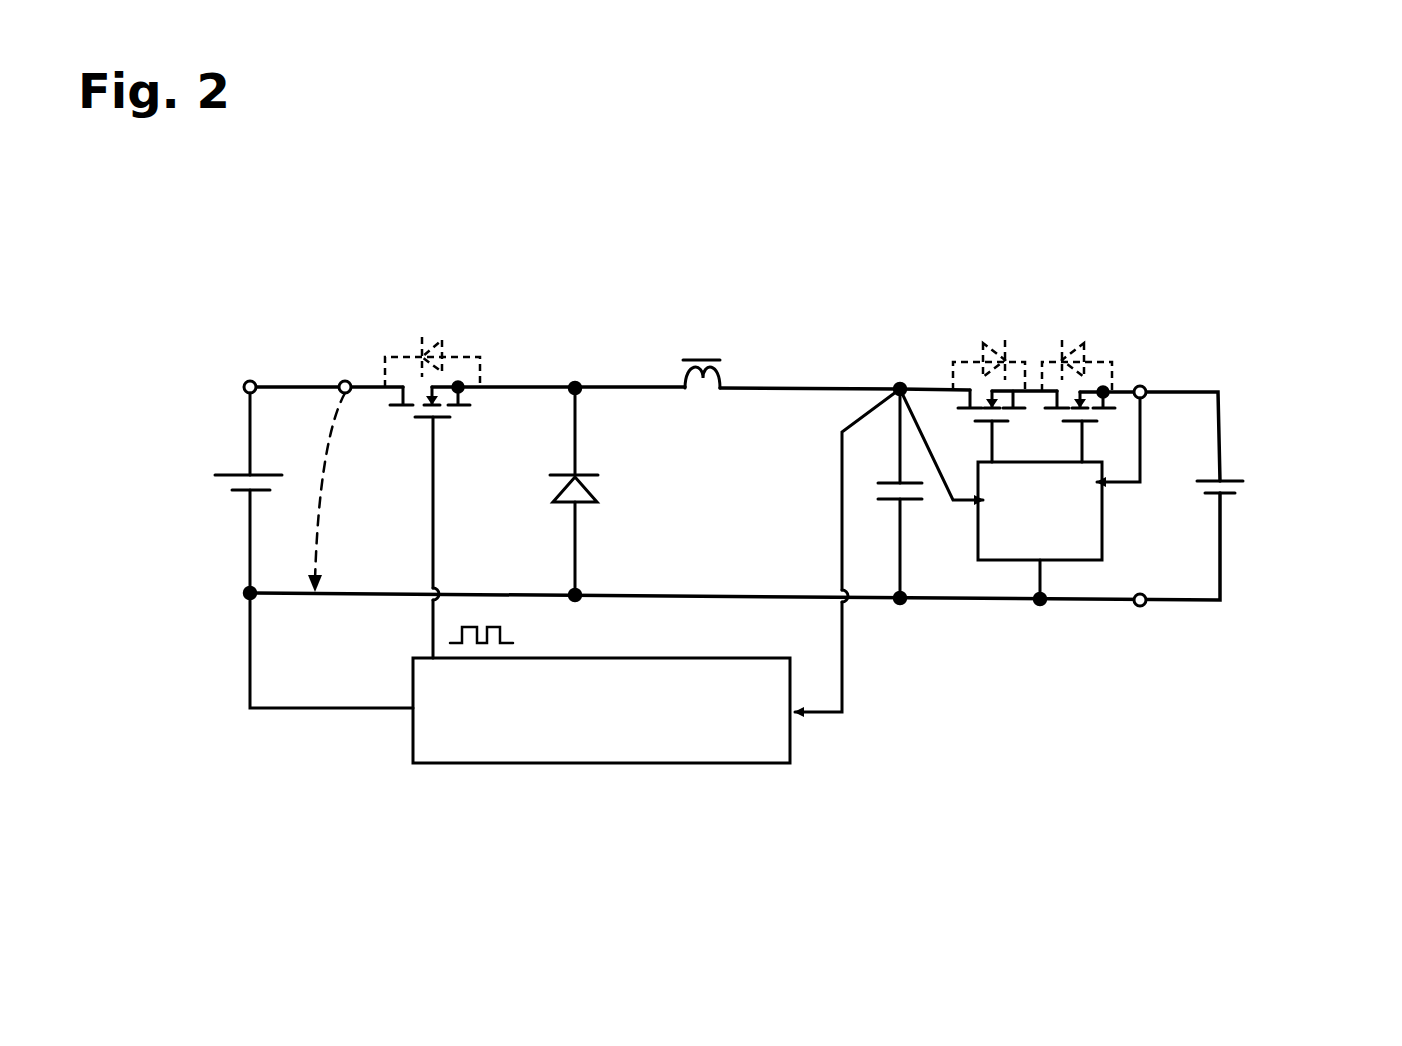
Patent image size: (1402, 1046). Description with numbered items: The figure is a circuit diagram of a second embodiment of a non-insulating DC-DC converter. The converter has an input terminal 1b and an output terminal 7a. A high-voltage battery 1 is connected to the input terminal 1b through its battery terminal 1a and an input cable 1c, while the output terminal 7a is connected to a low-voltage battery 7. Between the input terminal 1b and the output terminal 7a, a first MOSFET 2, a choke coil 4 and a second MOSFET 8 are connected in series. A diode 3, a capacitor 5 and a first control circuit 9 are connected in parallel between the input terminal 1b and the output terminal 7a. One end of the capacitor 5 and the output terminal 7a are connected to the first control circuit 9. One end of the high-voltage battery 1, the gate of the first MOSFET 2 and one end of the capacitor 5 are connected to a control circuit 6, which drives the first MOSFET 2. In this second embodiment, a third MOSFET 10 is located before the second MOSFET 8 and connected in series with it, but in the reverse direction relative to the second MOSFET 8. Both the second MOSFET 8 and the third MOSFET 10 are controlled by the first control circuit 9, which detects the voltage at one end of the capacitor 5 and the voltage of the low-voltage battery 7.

The high-voltage battery 1 is at (217, 492).
The battery terminal 1a is at (248, 385).
The input terminal 1b is at (347, 382).
The input cable 1c is at (290, 386).
The first MOSFET 2 is at (460, 330).
The diode 3 is at (597, 492).
The choke coil 4 is at (703, 350).
The capacitor 5 is at (915, 510).
The control circuit 6 is at (635, 763).
The low-voltage battery 7 is at (1233, 472).
The output terminal 7a is at (1143, 387).
The second MOSFET 8 is at (1077, 333).
The first control circuit 9 is at (1103, 530).
The third MOSFET 10 is at (1003, 327).